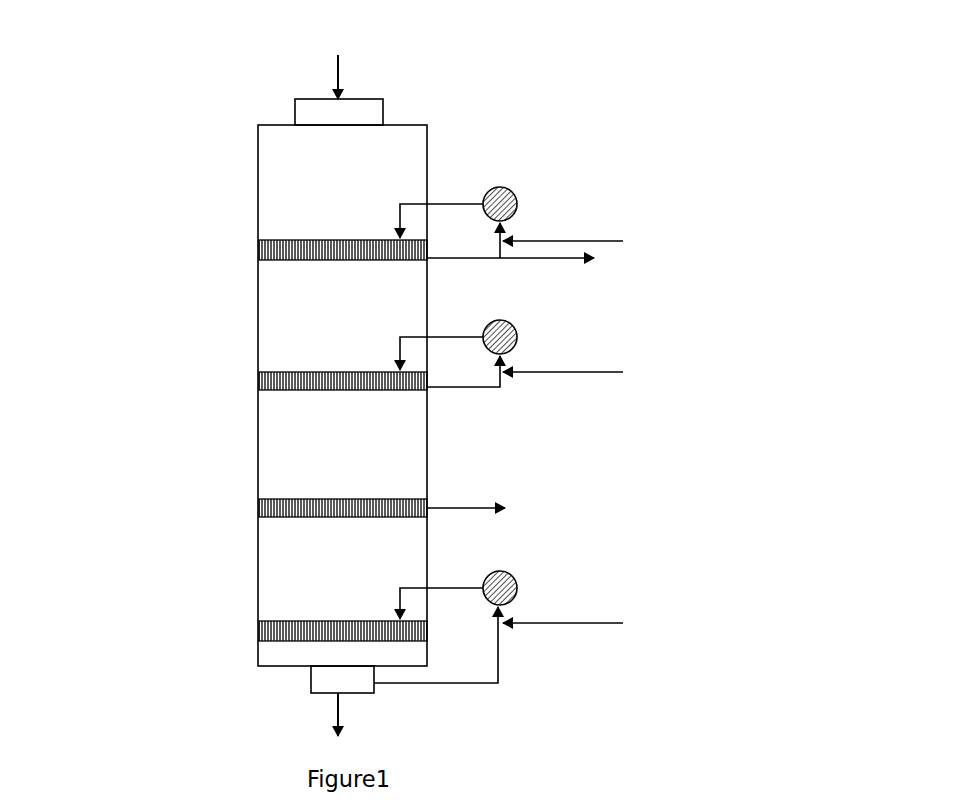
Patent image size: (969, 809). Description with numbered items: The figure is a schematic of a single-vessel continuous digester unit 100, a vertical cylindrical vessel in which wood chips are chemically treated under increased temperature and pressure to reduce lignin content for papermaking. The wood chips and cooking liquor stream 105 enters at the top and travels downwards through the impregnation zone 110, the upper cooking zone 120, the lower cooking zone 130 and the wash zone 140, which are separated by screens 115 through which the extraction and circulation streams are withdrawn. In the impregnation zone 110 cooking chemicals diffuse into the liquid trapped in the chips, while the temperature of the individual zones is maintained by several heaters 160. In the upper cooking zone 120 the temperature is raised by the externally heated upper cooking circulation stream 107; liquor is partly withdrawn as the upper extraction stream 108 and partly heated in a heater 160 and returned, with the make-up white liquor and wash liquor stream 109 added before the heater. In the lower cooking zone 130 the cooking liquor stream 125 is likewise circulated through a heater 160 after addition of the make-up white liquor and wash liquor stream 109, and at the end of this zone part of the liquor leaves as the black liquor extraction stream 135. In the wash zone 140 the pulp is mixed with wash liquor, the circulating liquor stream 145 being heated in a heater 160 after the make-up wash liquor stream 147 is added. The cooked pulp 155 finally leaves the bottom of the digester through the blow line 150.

The continuous digester unit 100 is at (125, 648).
The wood chips and cooking liquor stream 105 is at (330, 82).
The upper cooking circulation stream 107 is at (497, 245).
The upper extraction stream 108 is at (570, 272).
The make-up white liquor and wash liquor stream 109 is at (567, 240).
The impregnation zone 110 is at (342, 182).
The screens 115 is at (243, 250).
The upper cooking zone 120 is at (342, 316).
The cooking liquor stream 125 is at (473, 377).
The lower cooking zone 130 is at (342, 444).
The black liquor extraction stream 135 is at (460, 497).
The wash zone 140 is at (342, 569).
The circulating liquor stream 145 is at (450, 649).
The make-up wash liquor stream 147 is at (585, 613).
The blow line 150 is at (300, 683).
The pulp 155 is at (345, 712).
The heaters 160 is at (498, 175).